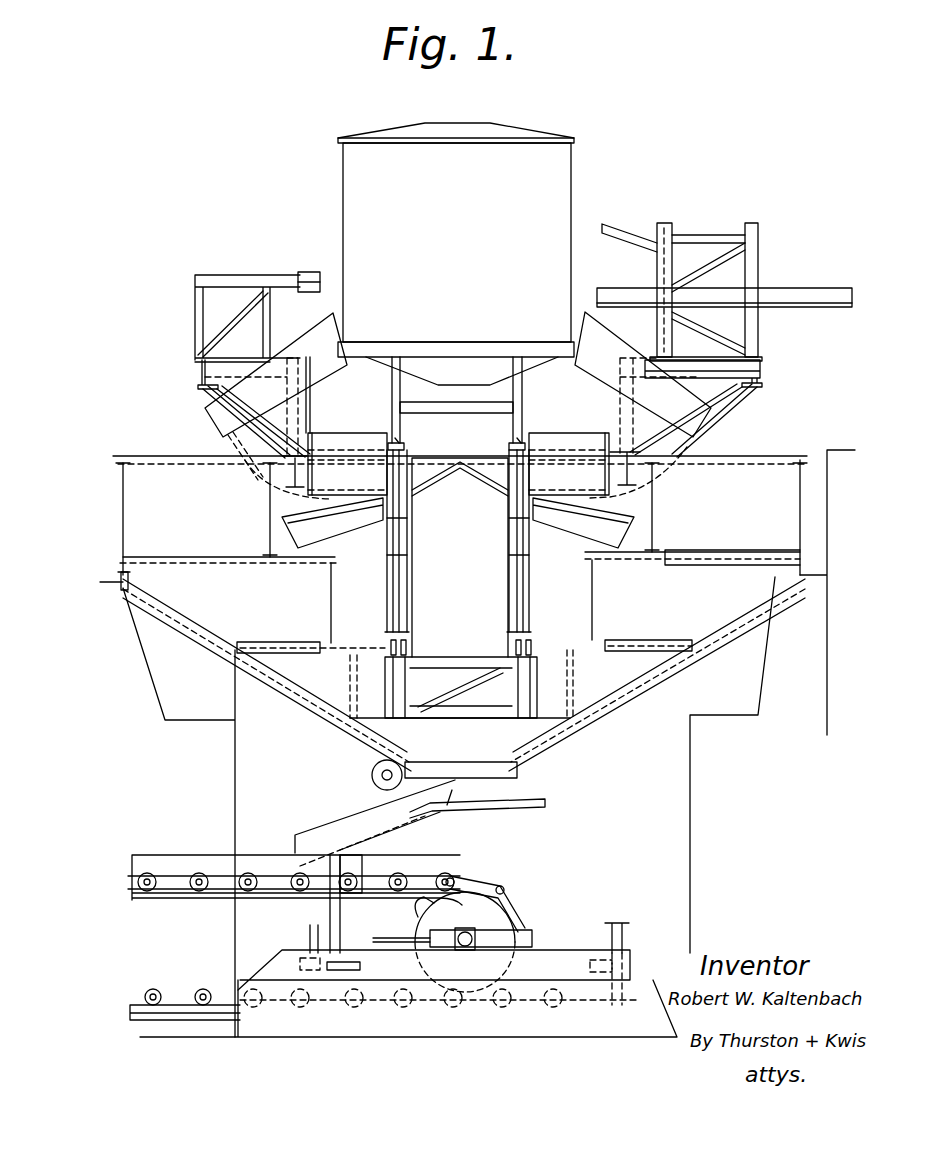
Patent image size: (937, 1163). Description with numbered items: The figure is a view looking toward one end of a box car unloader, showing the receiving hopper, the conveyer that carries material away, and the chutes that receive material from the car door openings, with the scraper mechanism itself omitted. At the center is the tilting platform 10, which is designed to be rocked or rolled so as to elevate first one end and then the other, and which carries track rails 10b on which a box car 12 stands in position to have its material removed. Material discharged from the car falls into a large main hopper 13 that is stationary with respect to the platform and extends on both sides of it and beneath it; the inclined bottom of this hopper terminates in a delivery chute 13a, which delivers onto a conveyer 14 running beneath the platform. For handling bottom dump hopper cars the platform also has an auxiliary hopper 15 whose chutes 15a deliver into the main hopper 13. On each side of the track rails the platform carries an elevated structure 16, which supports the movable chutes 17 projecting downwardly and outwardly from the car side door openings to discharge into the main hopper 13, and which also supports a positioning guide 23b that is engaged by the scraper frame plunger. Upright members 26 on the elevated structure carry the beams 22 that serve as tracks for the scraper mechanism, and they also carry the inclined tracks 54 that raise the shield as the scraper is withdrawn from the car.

The tilting platform 10 is at (472, 494).
The track rails 10b is at (404, 447).
The box car 12 is at (456, 254).
The main hopper 13 is at (143, 478).
The delivery chute 13a is at (347, 812).
The conveyer 14 is at (167, 878).
The auxiliary hopper 15 is at (428, 477).
The auxiliary hopper chutes 15a is at (327, 535).
The elevated structure 16 is at (203, 383).
The chutes 17 is at (313, 367).
The beams 22 is at (785, 289).
The positioning guide 23b is at (310, 270).
The upright members 26 is at (660, 265).
The inclined tracks 54 is at (620, 224).